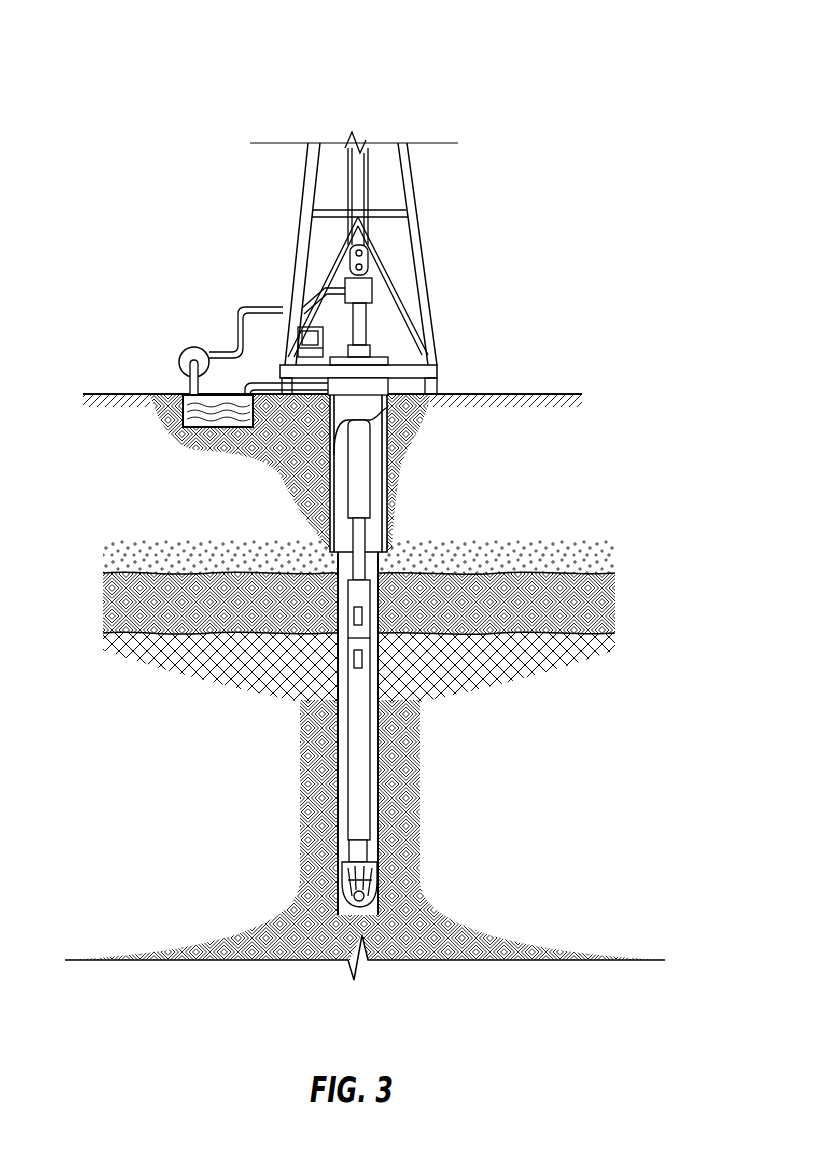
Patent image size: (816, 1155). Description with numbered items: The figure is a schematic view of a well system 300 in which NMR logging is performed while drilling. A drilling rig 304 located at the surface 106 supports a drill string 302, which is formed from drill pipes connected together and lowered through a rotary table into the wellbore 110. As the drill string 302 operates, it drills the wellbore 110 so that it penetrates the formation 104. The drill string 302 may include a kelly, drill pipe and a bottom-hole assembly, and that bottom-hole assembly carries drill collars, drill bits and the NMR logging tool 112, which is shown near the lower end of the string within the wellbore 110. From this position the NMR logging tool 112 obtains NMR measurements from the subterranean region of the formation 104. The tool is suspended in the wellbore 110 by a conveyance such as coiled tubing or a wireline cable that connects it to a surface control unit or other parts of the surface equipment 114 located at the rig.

The well system 300 is at (145, 62).
The formation 104 is at (563, 525).
The surface 106 is at (552, 392).
The wellbore 110 is at (337, 733).
The NMR logging tool 112 is at (365, 808).
The surface equipment 114 is at (437, 210).
The drill string 302 is at (343, 563).
The drilling rig 304 is at (205, 288).